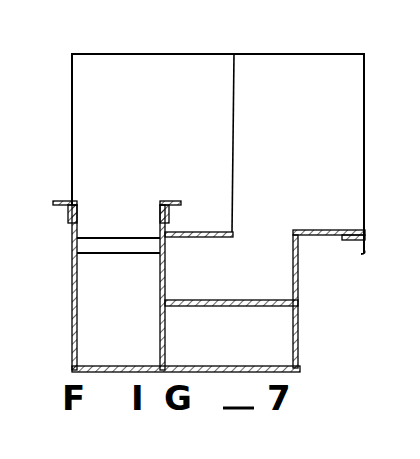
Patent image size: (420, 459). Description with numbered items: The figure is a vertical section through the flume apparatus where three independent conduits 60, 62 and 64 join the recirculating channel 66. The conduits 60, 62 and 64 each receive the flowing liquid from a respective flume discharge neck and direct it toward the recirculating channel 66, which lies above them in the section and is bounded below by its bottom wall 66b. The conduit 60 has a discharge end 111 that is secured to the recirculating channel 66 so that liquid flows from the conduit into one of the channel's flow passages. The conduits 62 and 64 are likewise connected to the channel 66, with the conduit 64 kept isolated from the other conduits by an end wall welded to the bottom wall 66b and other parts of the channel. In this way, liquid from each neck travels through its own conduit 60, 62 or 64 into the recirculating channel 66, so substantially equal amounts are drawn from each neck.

The recirculating channel 66 is at (319, 91).
The bottom wall 66b is at (277, 366).
The conduit 64 is at (143, 303).
The conduit 60 is at (253, 293).
The conduit 62 is at (248, 348).
The discharge end 111 is at (203, 238).